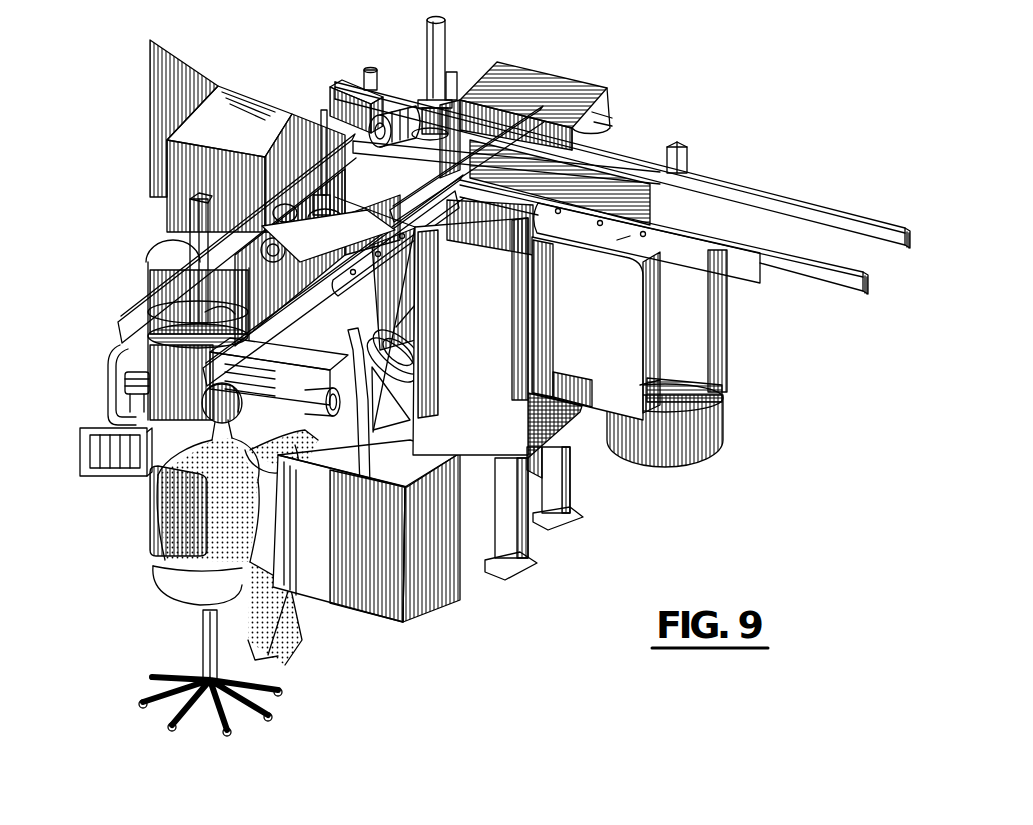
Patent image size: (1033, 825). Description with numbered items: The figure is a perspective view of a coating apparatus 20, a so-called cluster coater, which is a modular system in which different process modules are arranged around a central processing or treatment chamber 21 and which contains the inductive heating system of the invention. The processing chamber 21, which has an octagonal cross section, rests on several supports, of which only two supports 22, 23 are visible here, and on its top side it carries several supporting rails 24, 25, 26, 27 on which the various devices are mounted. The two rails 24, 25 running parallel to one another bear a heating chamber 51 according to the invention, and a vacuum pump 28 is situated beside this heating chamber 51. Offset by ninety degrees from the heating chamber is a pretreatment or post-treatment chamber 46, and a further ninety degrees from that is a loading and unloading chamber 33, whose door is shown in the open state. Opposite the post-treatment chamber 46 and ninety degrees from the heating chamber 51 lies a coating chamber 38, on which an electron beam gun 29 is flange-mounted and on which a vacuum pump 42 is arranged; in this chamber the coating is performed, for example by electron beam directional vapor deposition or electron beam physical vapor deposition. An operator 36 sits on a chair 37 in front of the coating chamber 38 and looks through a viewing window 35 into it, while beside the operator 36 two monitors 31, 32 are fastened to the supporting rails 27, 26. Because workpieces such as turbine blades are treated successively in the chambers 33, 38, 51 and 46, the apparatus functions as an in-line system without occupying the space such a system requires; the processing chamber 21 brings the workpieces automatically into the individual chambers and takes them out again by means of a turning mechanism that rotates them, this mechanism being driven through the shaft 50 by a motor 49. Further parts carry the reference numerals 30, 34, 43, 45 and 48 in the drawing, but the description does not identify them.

The coating apparatus 20 is at (845, 168).
The processing chamber 21 is at (507, 368).
The support 22 is at (577, 480).
The support 23 is at (530, 547).
The supporting rail 24 is at (815, 277).
The supporting rail 25 is at (873, 222).
The supporting rail 26 is at (138, 308).
The supporting rail 27 is at (205, 312).
The vacuum pump 28 is at (693, 388).
The electron beam gun 29 is at (457, 300).
The lower cabinet 30 is at (370, 597).
The monitor 31 is at (352, 500).
The monitor 32 is at (97, 448).
The loading and unloading chamber 33 is at (267, 107).
The plate 34 is at (173, 72).
The viewing window 35 is at (283, 466).
The operator 36 is at (207, 573).
The chair 37 is at (163, 507).
The coating chamber 38 is at (390, 420).
The vacuum pump 42 is at (167, 245).
The post 43 is at (187, 193).
The clamp 45 is at (371, 68).
The pretreatment or post-treatment chamber 46 is at (583, 88).
The post 48 is at (679, 142).
The motor 49 is at (410, 92).
The shaft 50 is at (448, 37).
The heating chamber 51 is at (717, 398).